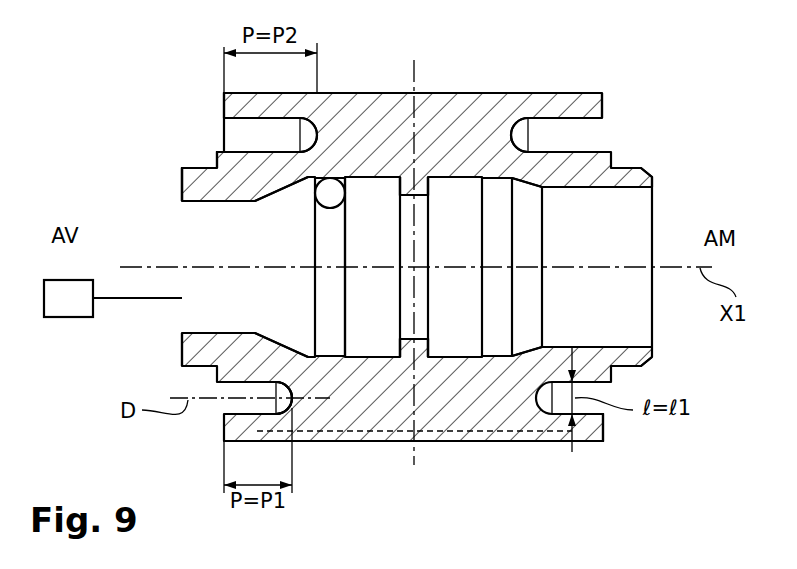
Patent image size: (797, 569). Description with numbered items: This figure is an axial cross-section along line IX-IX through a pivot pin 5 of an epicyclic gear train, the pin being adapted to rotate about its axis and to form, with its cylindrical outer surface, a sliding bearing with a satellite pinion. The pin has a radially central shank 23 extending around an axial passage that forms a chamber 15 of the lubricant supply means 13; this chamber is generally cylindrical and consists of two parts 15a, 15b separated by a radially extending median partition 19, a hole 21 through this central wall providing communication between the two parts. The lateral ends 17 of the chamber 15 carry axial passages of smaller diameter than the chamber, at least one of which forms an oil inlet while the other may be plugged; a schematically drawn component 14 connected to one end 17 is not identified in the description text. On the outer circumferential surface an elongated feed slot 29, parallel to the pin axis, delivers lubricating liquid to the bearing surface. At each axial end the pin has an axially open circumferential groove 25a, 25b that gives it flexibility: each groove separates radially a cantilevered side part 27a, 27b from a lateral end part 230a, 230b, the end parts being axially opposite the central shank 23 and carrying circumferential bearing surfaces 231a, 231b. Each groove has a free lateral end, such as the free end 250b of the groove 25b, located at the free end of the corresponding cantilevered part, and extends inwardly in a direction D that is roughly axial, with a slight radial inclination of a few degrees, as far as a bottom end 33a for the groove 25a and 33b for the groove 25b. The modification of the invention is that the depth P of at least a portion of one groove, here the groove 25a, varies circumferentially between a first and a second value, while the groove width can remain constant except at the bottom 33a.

The pivot pin 5 is at (468, 90).
The lubricant supply means 13 is at (222, 243).
The control unit 14 is at (73, 302).
The chamber 15 is at (385, 190).
The first chamber part 15a is at (370, 343).
The second chamber part 15b is at (495, 338).
The ends of the chamber 17 is at (220, 300).
The median partition 19 is at (420, 190).
The hole 21 is at (422, 322).
The central shank 23 is at (445, 163).
The first circumferential groove 25a is at (250, 135).
The second circumferential groove 25b is at (562, 132).
The first cantilevered side part 27a is at (232, 102).
The second cantilevered side part 27b is at (603, 433).
The feed slot 29 is at (490, 434).
The bottom end of first groove 33a is at (293, 407).
The bottom end of second groove 33b is at (508, 137).
The first lateral end part 230a is at (203, 183).
The second lateral end part 230b is at (627, 175).
The first circumferential bearing surface 231a is at (200, 167).
The second circumferential bearing surface 231b is at (628, 367).
The free lateral end of second groove 250b is at (603, 125).